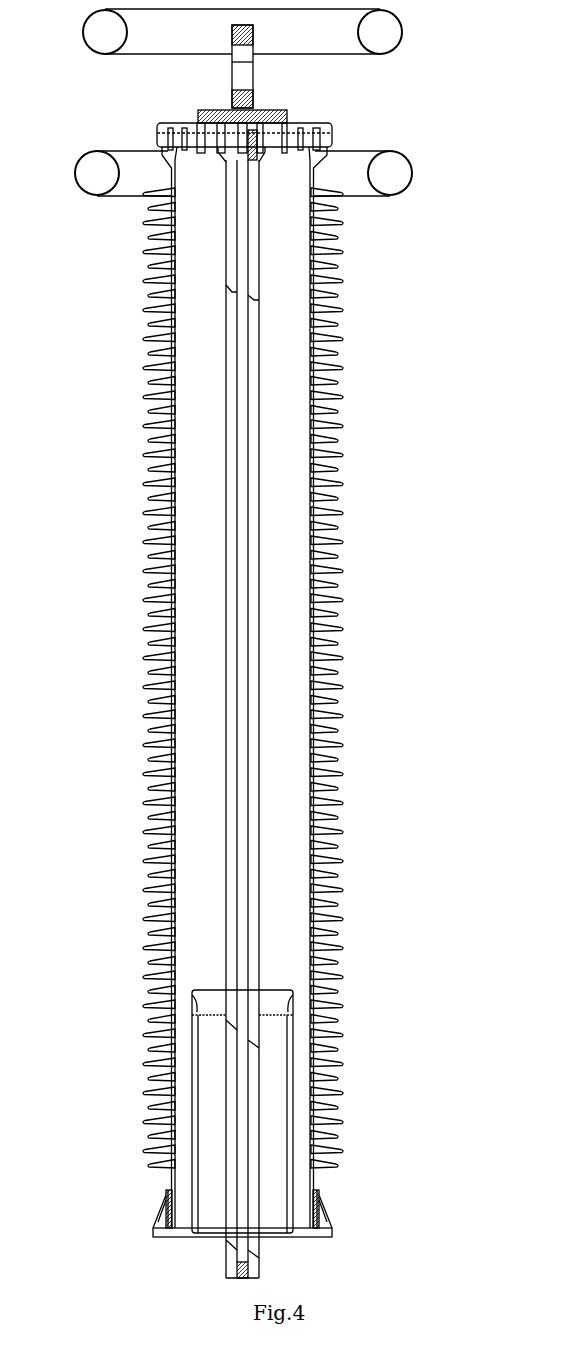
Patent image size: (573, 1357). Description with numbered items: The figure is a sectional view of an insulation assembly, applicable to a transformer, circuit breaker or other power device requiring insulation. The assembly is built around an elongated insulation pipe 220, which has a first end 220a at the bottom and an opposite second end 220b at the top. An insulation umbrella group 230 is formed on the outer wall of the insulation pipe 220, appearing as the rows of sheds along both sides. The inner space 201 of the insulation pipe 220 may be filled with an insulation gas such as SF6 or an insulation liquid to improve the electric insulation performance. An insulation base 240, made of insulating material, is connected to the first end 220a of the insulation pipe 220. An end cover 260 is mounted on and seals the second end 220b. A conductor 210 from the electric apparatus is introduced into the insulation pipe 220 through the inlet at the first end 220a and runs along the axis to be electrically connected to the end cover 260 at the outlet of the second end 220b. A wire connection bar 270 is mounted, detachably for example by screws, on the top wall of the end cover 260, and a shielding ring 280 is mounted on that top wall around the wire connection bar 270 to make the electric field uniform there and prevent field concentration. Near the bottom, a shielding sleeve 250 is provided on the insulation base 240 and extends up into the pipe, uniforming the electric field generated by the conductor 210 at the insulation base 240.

The inner space 201 is at (238, 687).
The conductor 210 is at (255, 557).
The insulation pipe 220 is at (238, 687).
The first end 220a is at (168, 1172).
The second end 220b is at (170, 172).
The insulation umbrella group 230 is at (147, 572).
The insulation base 240 is at (334, 1194).
The shielding sleeve 250 is at (192, 1088).
The end cover 260 is at (297, 123).
The wire connection bar 270 is at (243, 80).
The shielding ring 280 is at (393, 172).